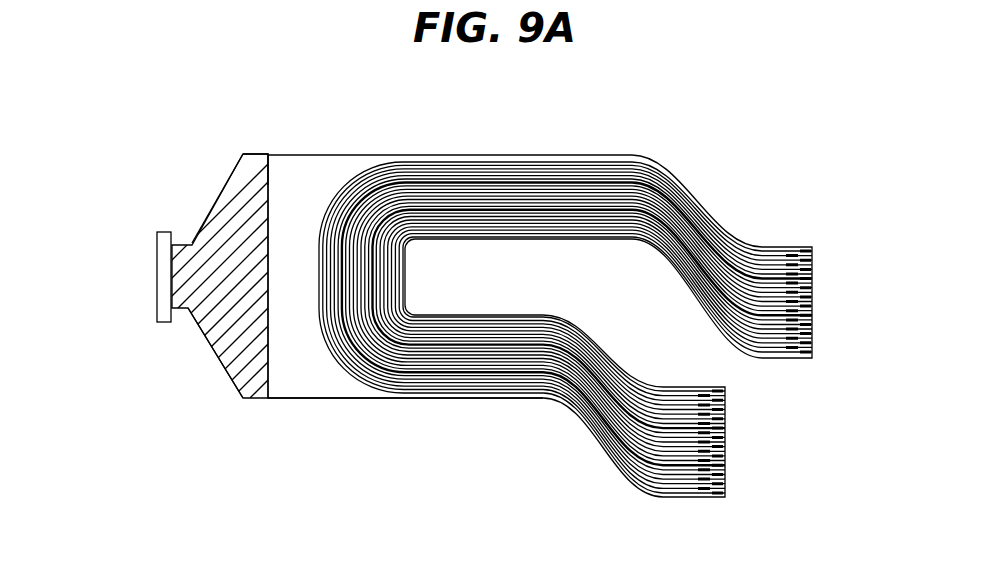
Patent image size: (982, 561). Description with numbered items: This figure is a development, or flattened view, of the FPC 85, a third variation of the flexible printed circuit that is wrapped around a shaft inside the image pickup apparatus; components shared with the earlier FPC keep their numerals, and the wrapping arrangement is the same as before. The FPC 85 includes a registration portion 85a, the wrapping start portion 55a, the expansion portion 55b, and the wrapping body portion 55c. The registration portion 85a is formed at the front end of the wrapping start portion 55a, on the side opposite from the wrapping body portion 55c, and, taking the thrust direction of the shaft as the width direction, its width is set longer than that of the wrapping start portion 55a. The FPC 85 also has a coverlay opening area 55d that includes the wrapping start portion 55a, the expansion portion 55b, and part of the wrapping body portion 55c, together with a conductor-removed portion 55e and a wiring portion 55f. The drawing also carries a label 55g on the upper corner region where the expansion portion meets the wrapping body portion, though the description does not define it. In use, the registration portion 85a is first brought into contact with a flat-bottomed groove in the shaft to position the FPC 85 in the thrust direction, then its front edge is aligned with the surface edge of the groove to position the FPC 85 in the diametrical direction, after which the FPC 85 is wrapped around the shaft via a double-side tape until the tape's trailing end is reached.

The FPC 85 is at (747, 133).
The registration portion 85a is at (160, 292).
The wrapping start portion 55a is at (173, 267).
The expansion portion 55b is at (198, 228).
The wrapping body portion 55c is at (313, 153).
The coverlay opening area 55d is at (227, 357).
The conductor-removed portion 55e is at (288, 383).
The wiring portion 55f is at (357, 382).
The upper corner portion 55g is at (268, 179).